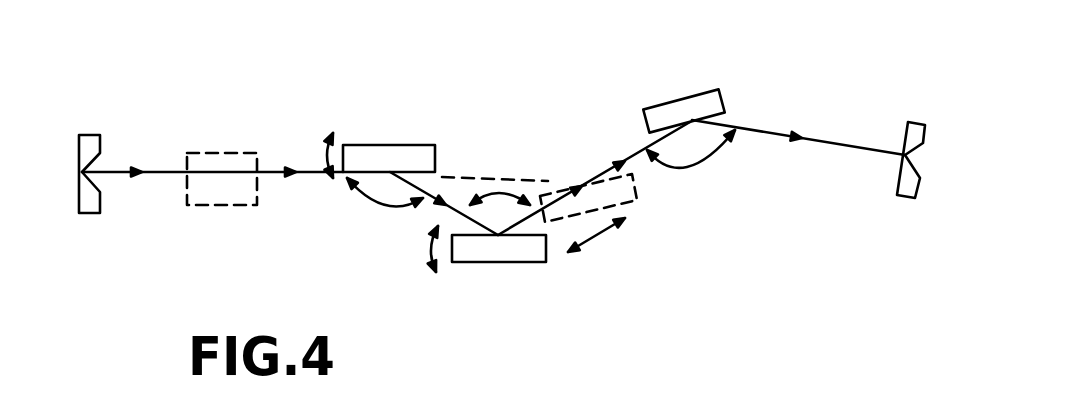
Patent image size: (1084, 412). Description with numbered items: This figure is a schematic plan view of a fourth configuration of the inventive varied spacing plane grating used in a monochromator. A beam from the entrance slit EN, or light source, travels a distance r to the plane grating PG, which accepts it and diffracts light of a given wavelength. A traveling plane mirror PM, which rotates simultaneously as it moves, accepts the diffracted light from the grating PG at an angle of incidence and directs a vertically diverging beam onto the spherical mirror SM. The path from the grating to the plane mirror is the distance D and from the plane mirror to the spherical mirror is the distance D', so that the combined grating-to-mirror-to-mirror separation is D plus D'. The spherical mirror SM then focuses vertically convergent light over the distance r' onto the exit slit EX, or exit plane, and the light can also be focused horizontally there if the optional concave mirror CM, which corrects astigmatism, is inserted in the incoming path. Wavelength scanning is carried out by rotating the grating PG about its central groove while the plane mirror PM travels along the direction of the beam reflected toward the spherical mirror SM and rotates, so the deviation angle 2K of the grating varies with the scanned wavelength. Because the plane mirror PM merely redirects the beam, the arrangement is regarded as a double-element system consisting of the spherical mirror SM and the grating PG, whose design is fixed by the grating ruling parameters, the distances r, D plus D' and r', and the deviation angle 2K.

The entrance slit EN is at (111, 140).
The EN-to-PG distance r is at (212, 147).
The optional concave mirror CM is at (222, 151).
The varied spacing plane grating PG is at (379, 128).
The PG-to-PM distance D is at (469, 173).
The deviation angle of the grating 2K is at (385, 225).
The plane mirror PM is at (526, 262).
The PM-to-SM distance D' is at (594, 172).
The spherical mirror SM is at (684, 94).
The SM-to-EX distance r' is at (798, 123).
The exit slit EX is at (919, 134).